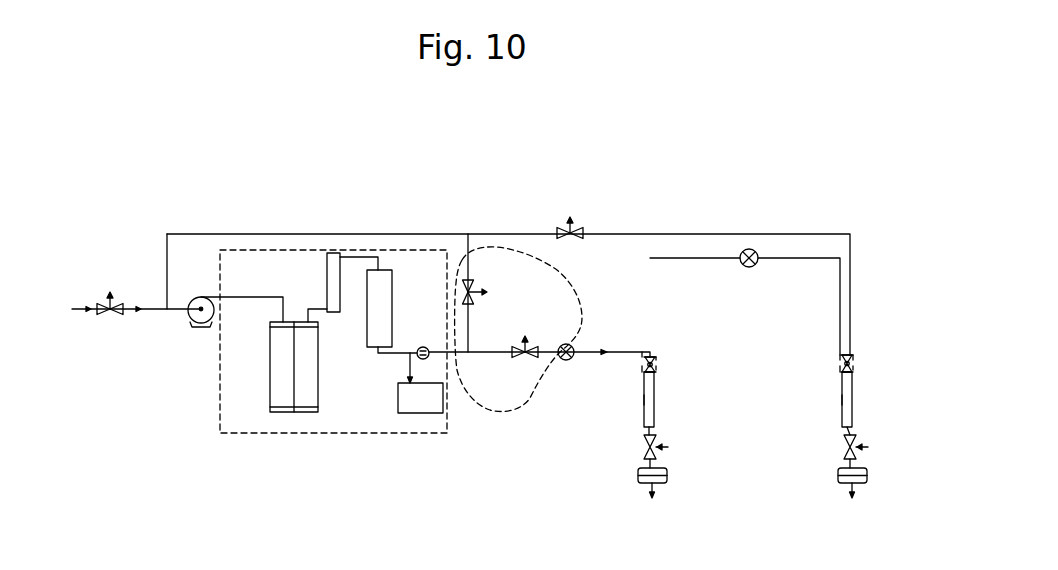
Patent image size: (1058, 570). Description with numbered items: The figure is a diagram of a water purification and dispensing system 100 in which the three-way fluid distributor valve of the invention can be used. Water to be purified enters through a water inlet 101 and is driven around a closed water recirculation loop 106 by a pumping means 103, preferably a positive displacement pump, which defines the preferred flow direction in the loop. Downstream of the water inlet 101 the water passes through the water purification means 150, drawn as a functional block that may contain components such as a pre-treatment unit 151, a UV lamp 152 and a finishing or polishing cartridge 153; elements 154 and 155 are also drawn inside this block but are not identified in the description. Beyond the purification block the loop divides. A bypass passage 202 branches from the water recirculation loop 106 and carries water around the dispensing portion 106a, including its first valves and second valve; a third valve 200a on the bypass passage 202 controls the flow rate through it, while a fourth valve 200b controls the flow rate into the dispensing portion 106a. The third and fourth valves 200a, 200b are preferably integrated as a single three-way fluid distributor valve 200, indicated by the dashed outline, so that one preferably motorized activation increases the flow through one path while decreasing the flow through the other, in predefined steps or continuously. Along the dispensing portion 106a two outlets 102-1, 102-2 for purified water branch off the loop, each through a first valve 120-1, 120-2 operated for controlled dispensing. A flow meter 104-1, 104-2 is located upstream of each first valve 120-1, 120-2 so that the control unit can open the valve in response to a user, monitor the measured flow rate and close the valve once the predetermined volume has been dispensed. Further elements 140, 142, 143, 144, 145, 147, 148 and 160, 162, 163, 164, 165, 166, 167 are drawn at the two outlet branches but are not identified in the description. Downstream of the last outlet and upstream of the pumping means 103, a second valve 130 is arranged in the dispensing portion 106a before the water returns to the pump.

The water purification and dispensing system 100 is at (147, 256).
The water inlet 101 is at (123, 304).
The pumping means 103 is at (197, 328).
The water recirculation loop 106 is at (250, 234).
The dispensing portion 106a is at (846, 233).
The second valve 130 is at (585, 229).
The water purification means 150 is at (333, 356).
The pre-treatment unit 151 is at (278, 393).
The UV lamp 152 is at (327, 272).
The finishing or polishing cartridge 153 is at (393, 312).
The sensor 154 is at (424, 346).
The controller 155 is at (398, 408).
The three-way fluid distributor valve 200 is at (518, 346).
The bypass passage 202 is at (466, 250).
The third valve 200a is at (473, 286).
The fourth valve 200b is at (533, 359).
The flow meter 104-1 is at (566, 361).
The flow meter 104-2 is at (747, 268).
The first mixing valve 140 is at (658, 363).
The first inlet 142 is at (642, 360).
The second inlet 143 is at (642, 366).
The inlet port 144 is at (657, 359).
The outlet port 145 is at (658, 368).
The outlet tube 147 is at (655, 396).
The outlet line 148 is at (644, 400).
The first valve 120-1 is at (677, 447).
The outlet 102-1 is at (654, 492).
The second mixing valve 160 is at (855, 363).
The first inlet 162 is at (838, 359).
The second inlet 163 is at (839, 371).
The inlet port 164 is at (854, 357).
The outlet port 165 is at (856, 370).
The outlet line 166 is at (842, 402).
The outlet tube 167 is at (853, 397).
The first valve 120-2 is at (877, 447).
The outlet 102-2 is at (856, 493).